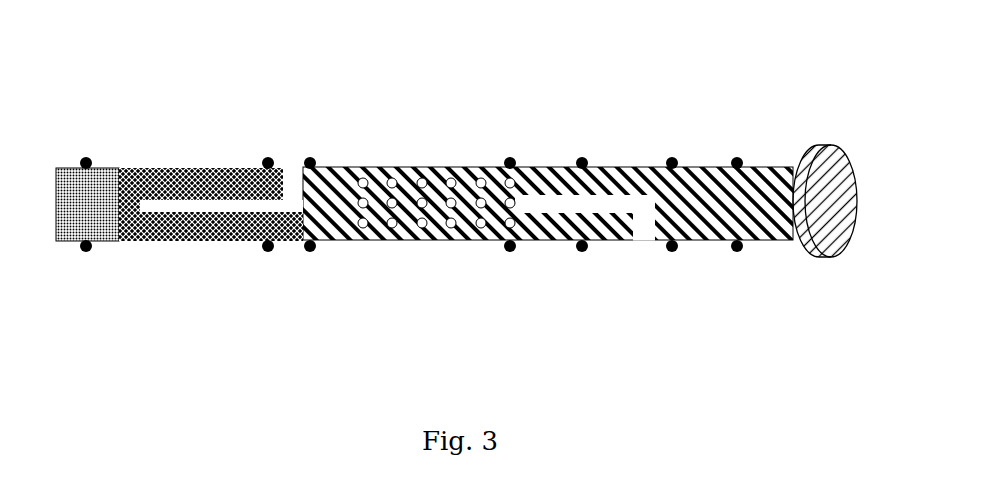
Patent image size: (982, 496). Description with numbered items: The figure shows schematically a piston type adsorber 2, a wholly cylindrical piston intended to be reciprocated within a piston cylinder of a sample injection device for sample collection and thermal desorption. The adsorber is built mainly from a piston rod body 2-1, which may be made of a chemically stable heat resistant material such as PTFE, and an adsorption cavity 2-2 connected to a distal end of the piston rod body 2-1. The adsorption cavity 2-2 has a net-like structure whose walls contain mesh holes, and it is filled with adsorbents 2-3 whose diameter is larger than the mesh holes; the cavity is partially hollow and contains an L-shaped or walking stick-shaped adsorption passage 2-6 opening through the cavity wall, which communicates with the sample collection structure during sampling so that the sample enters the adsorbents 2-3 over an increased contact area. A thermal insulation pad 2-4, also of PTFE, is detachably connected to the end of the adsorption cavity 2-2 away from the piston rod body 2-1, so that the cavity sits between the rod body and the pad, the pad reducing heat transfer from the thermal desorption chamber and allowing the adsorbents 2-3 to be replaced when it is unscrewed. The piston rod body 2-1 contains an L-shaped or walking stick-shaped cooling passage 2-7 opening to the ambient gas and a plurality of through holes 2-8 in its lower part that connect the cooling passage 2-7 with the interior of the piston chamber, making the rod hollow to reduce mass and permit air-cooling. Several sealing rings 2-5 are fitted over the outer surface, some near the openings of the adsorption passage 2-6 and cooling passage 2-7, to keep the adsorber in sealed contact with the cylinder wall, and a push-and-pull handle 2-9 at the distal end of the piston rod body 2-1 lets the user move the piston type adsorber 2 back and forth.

The piston type adsorber 2 is at (375, 106).
The piston rod body 2-1 is at (706, 195).
The adsorption cavity 2-2 is at (233, 198).
The adsorbents 2-3 is at (187, 200).
The thermal insulation pad 2-4 is at (72, 210).
The sealing rings 2-5 is at (86, 157).
The adsorption passage 2-6 is at (279, 206).
The cooling passage 2-7 is at (600, 200).
The through holes 2-8 is at (423, 205).
The push-and-pull handle 2-9 is at (830, 200).